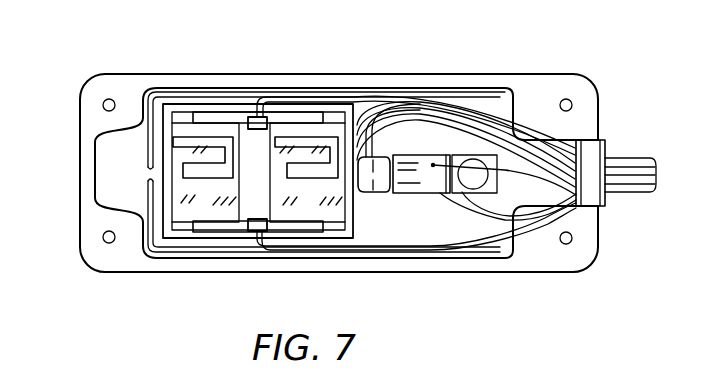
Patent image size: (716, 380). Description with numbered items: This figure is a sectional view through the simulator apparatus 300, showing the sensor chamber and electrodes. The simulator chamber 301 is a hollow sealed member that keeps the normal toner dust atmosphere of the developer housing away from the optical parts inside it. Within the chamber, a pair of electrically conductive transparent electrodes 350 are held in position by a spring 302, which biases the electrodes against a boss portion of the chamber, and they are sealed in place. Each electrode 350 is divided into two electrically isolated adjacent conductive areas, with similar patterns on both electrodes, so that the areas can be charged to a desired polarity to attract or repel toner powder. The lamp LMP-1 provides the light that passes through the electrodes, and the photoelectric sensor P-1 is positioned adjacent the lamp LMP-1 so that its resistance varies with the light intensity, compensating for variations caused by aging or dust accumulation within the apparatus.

The simulator apparatus 300 is at (454, 72).
The simulator chamber 301 is at (92, 262).
The spring 302 is at (223, 112).
The transparent electrode 350 is at (192, 150).
The photoelectric sensor P-1 is at (360, 194).
The lamp LMP-1 is at (388, 196).